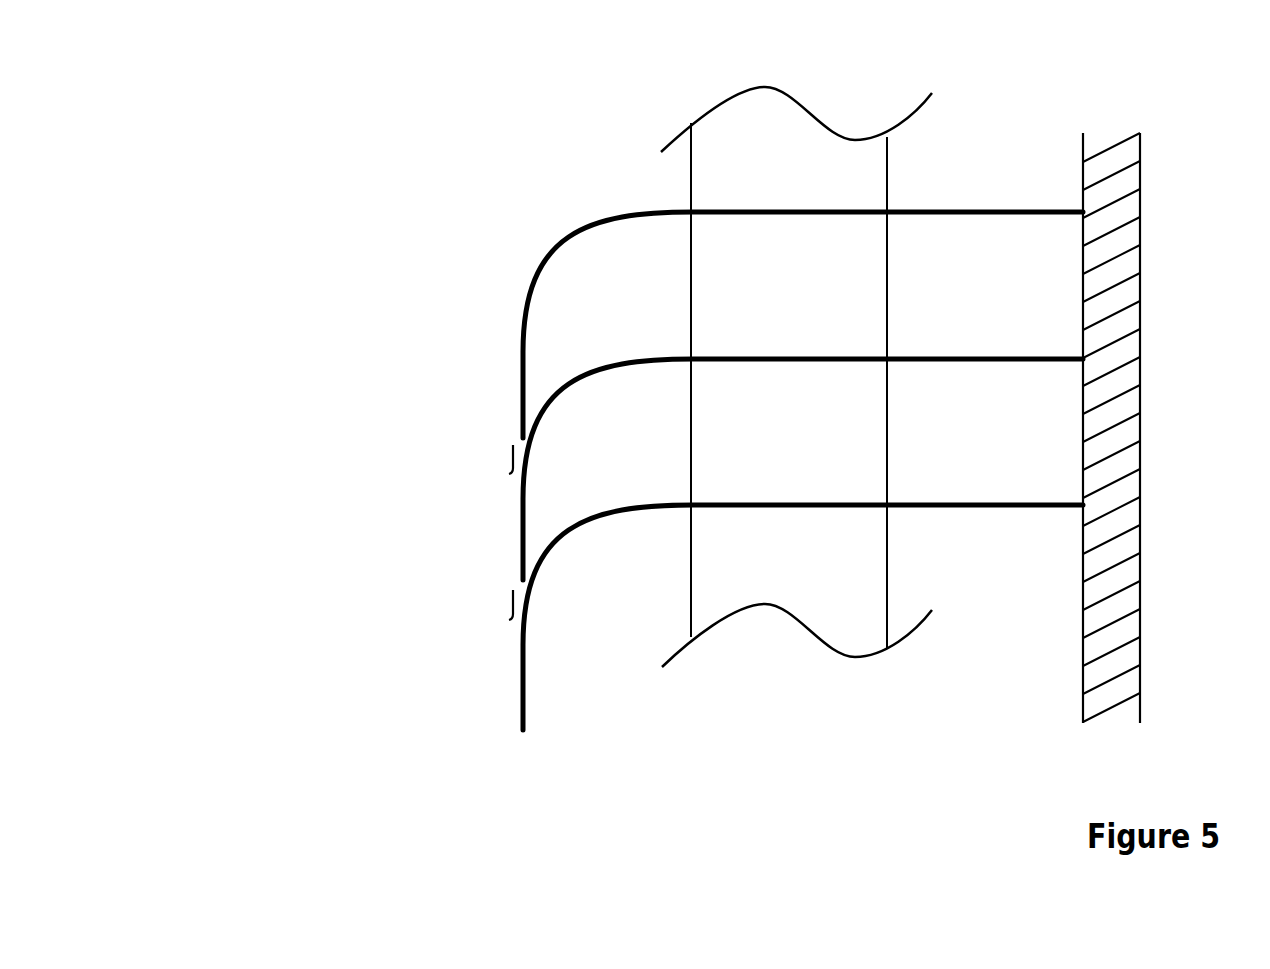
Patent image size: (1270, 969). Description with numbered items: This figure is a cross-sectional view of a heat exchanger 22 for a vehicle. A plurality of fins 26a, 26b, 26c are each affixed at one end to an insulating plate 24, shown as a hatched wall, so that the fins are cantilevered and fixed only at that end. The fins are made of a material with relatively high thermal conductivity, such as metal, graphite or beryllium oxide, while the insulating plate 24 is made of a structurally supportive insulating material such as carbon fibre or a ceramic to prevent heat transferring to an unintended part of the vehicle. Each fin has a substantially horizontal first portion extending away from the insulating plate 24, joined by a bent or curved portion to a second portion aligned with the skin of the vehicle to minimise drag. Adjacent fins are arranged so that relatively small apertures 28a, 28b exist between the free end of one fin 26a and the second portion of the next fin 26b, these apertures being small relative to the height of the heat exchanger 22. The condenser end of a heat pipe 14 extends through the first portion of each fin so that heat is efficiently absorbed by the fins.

The heat exchanger 22 is at (268, 104).
The heat pipe 14 is at (691, 174).
The insulating plate 24 is at (1140, 428).
The fin 26a is at (523, 315).
The fin 26b is at (521, 519).
The fin 26c is at (521, 673).
The aperture 28a is at (510, 452).
The aperture 28b is at (510, 597).